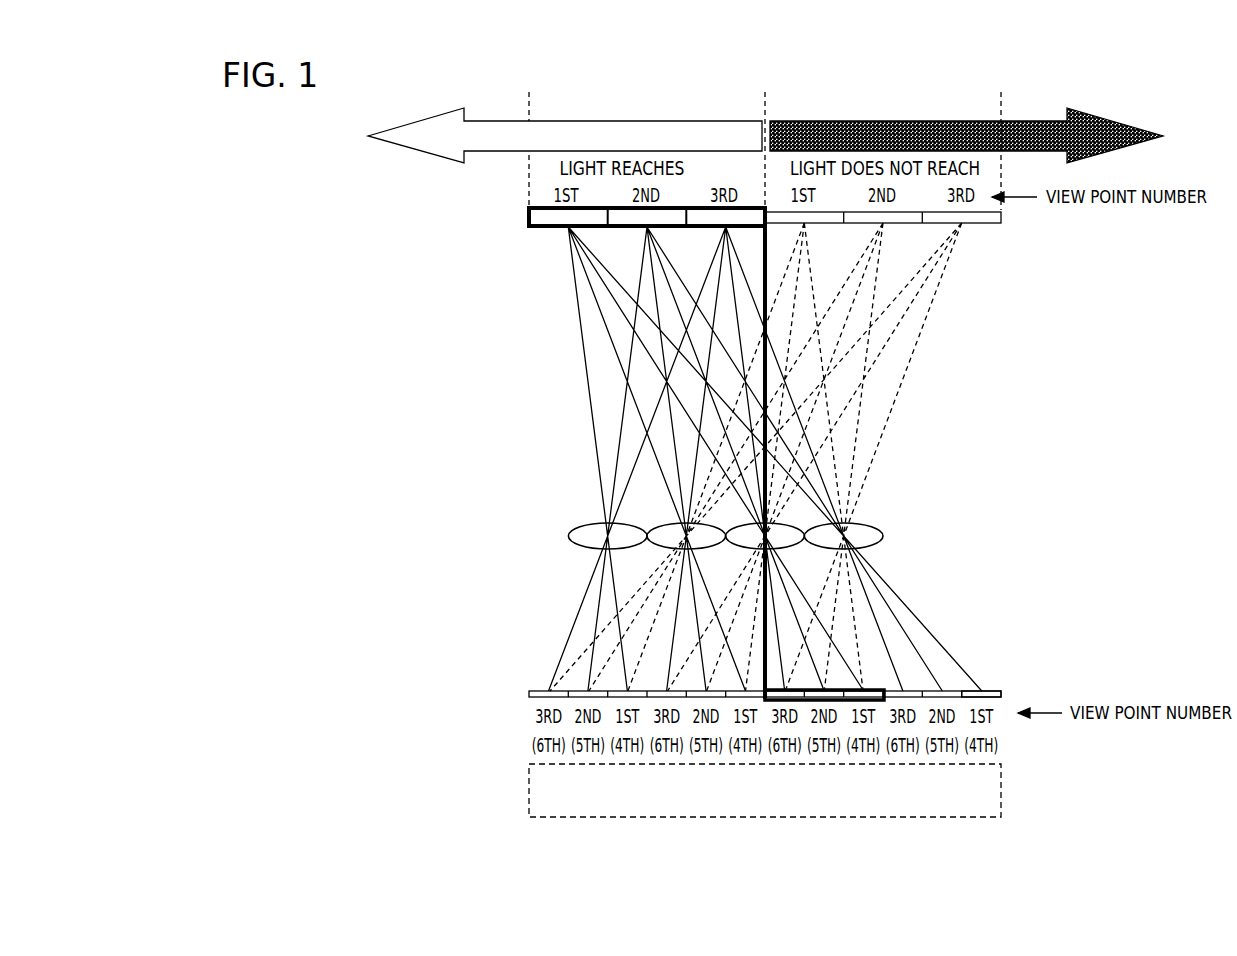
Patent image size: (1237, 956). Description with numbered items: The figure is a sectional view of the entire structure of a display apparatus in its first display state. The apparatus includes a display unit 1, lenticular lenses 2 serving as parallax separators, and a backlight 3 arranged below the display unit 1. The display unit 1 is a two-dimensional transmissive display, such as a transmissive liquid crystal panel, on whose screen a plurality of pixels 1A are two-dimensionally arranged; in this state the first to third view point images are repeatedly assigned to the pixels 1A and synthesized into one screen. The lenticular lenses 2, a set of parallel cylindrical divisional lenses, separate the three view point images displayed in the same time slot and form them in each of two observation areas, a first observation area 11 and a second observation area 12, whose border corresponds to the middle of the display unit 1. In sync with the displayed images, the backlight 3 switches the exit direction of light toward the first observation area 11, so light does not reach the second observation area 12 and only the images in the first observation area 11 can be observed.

The first observation area 11 is at (533, 104).
The second observation area 12 is at (769, 104).
The display unit 1 is at (1022, 688).
The pixel 1A is at (996, 690).
The lenticular lenses 2 is at (915, 529).
The backlight 3 is at (1001, 790).